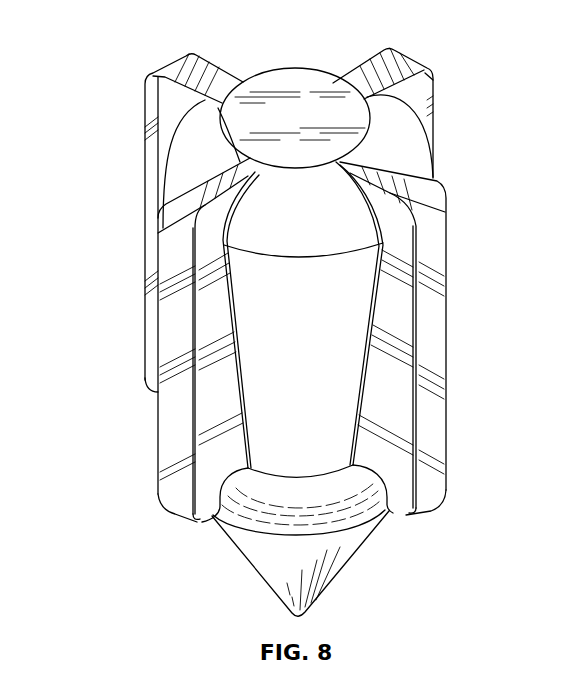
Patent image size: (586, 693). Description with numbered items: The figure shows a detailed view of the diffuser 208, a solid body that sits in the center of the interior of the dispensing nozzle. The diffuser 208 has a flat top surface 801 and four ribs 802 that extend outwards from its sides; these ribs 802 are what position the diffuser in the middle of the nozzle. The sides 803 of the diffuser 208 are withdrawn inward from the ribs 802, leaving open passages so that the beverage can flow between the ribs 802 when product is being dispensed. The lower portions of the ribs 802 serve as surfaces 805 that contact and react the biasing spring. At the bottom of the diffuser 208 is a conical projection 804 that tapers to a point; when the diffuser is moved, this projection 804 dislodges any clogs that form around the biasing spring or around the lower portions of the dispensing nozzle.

The diffuser 208 is at (86, 47).
The flat top surface 801 is at (283, 95).
The ribs 802 is at (428, 125).
The sides 803 is at (335, 365).
The conical projection 804 is at (343, 560).
The surfaces 805 is at (215, 514).